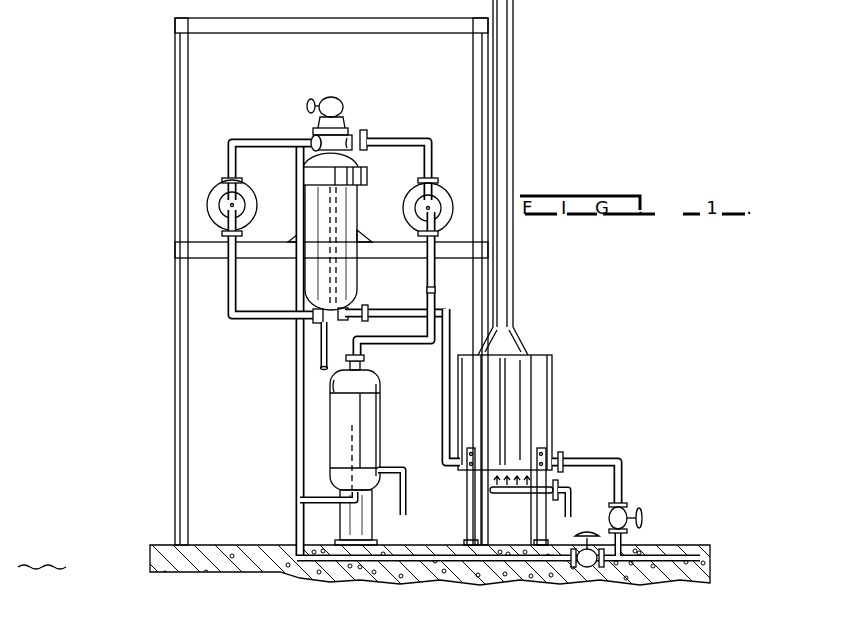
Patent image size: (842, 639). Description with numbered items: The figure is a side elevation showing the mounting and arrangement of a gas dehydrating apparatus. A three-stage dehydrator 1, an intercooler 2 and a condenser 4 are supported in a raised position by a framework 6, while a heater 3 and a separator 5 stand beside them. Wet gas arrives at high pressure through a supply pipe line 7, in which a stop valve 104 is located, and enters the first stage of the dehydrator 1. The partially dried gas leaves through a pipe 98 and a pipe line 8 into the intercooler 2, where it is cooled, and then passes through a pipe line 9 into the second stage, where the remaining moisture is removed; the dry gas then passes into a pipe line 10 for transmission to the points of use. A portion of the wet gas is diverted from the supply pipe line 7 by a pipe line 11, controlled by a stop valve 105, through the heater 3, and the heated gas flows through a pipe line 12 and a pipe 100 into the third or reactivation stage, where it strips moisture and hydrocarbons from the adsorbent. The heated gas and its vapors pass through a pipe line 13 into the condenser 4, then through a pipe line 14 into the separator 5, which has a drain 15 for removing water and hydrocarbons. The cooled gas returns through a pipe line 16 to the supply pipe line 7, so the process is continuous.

The three-stage dehydrator 1 is at (354, 218).
The intercooler 2 is at (243, 194).
The heater 3 is at (553, 374).
The condenser 4 is at (438, 188).
The separator 5 is at (381, 422).
The framework 6 is at (175, 302).
The supply pipe line 7 is at (296, 389).
The pipe line 8 is at (243, 320).
The pipe line 9 is at (243, 140).
The pipe line 10 is at (331, 336).
The pipe line 11 is at (624, 480).
The pipe line 12 is at (441, 427).
The pipe line 13 is at (376, 140).
The pipe line 14 is at (437, 302).
The drain 15 is at (407, 492).
The pipe line 16 is at (320, 505).
The pipe 98 is at (322, 330).
The pipe 100 is at (353, 307).
The stop valve 104 is at (586, 568).
The stop valve 105 is at (644, 514).